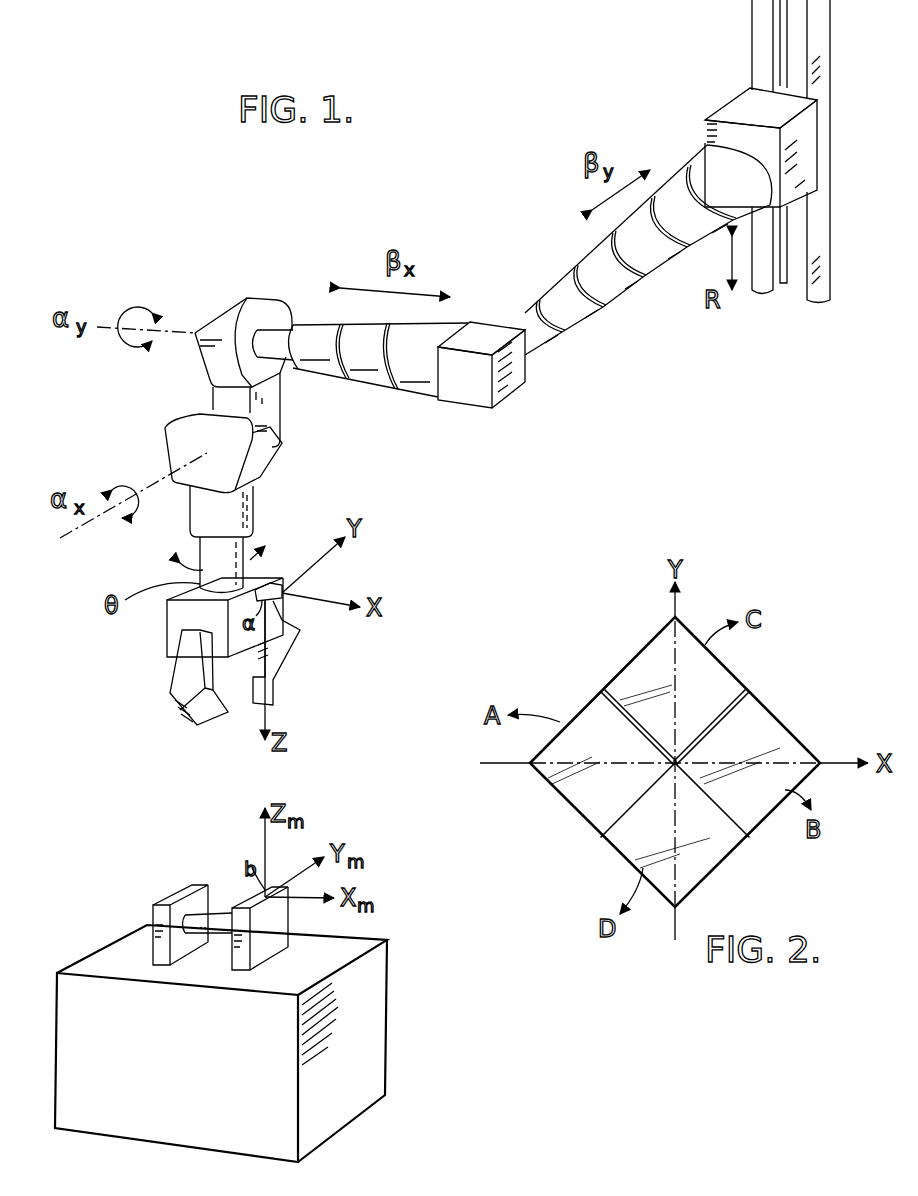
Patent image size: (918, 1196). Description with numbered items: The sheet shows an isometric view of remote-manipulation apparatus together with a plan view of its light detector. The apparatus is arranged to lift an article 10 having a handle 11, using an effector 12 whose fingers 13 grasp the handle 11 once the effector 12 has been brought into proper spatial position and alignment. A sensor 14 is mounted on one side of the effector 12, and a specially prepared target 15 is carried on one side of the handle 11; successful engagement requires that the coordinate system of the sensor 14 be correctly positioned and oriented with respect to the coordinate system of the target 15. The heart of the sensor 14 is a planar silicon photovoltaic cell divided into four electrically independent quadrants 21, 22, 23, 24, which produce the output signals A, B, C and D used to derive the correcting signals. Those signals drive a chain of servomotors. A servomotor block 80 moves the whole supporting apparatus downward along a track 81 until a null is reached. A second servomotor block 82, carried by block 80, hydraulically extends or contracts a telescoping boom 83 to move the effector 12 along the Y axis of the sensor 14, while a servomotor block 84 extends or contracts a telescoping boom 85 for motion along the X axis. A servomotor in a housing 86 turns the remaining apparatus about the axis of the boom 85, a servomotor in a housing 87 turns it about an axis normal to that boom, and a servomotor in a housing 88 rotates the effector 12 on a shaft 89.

In FIG. 1, the article 10 is at (375, 990).
In FIG. 1, the handle 11 is at (205, 900).
In FIG. 1, the effector 12 is at (170, 608).
In FIG. 1, the fingers 13 is at (182, 675).
In FIG. 1, the sensor 14 is at (282, 597).
In FIG. 1, the target 15 is at (265, 905).
In FIG. 2, the quadrant 21 is at (588, 707).
In FIG. 2, the quadrant 22 is at (780, 728).
In FIG. 2, the quadrant 23 is at (713, 680).
In FIG. 2, the quadrant 24 is at (633, 843).
In FIG. 1, the servomotor block 80 is at (743, 95).
In FIG. 1, the track 81 is at (827, 227).
In FIG. 1, the second servomotor block 82 is at (720, 112).
In FIG. 1, the telescoping boom 83 is at (623, 273).
In FIG. 1, the servomotor block 84 is at (513, 373).
In FIG. 1, the telescoping boom 85 is at (282, 370).
In FIG. 1, the housing 86 is at (237, 318).
In FIG. 1, the housing 87 is at (262, 462).
In FIG. 1, the housing 88 is at (237, 508).
In FIG. 1, the shaft 89 is at (210, 548).